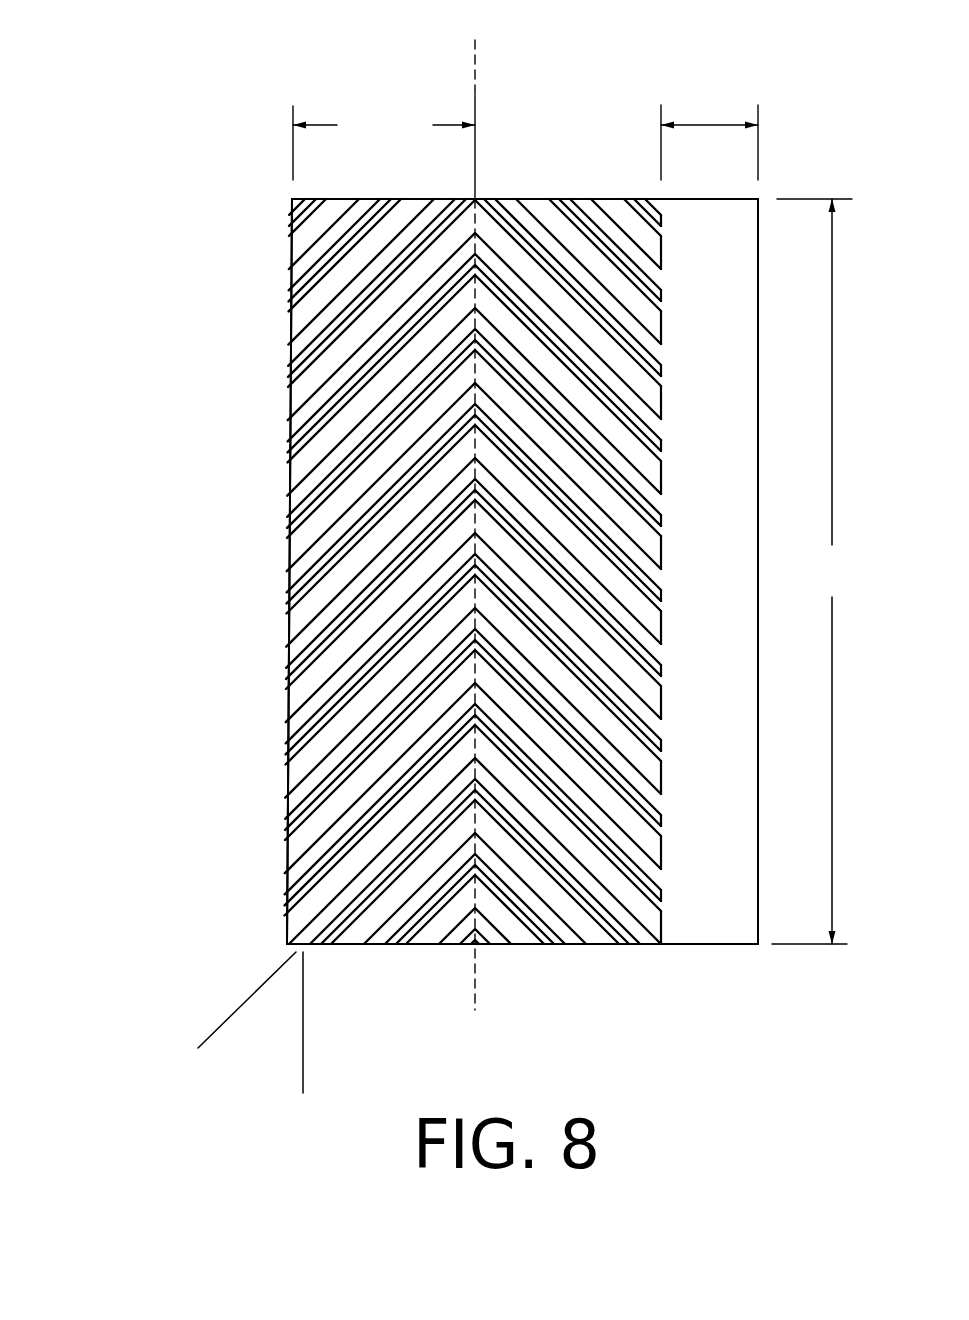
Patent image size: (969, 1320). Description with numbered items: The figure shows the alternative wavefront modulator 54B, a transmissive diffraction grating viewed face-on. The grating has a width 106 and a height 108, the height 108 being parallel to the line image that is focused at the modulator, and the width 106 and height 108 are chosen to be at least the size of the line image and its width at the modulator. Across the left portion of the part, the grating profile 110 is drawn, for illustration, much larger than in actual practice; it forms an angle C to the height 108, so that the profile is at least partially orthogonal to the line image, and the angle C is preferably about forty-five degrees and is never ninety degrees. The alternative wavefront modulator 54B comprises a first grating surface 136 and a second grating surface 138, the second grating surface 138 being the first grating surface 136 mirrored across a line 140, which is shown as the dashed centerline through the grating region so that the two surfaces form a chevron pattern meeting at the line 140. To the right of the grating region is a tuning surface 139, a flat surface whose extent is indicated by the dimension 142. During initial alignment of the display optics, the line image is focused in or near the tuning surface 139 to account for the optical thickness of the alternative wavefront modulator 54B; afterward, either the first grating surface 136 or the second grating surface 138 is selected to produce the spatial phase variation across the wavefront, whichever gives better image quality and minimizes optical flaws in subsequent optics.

The alternative wavefront modulator 54B is at (178, 254).
The width 106 is at (384, 143).
The height 108 is at (815, 571).
The grating profile 110 is at (285, 420).
The first grating surface 136 is at (298, 767).
The second grating surface 138 is at (444, 609).
The tuning surface 139 is at (722, 932).
The line 140 is at (480, 75).
The width dimension of smooth region 142 is at (710, 122).
The angle C is at (302, 1074).